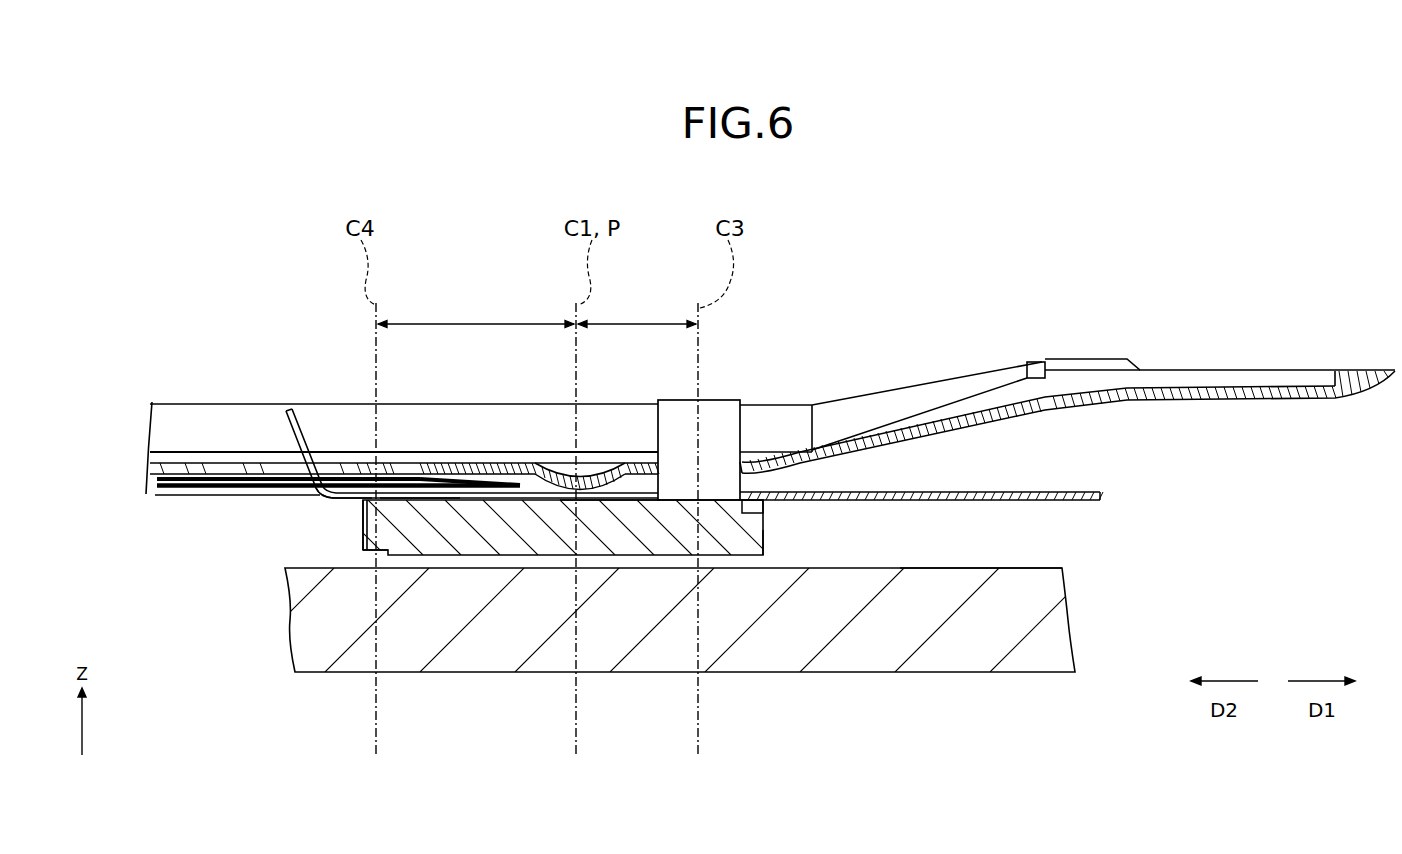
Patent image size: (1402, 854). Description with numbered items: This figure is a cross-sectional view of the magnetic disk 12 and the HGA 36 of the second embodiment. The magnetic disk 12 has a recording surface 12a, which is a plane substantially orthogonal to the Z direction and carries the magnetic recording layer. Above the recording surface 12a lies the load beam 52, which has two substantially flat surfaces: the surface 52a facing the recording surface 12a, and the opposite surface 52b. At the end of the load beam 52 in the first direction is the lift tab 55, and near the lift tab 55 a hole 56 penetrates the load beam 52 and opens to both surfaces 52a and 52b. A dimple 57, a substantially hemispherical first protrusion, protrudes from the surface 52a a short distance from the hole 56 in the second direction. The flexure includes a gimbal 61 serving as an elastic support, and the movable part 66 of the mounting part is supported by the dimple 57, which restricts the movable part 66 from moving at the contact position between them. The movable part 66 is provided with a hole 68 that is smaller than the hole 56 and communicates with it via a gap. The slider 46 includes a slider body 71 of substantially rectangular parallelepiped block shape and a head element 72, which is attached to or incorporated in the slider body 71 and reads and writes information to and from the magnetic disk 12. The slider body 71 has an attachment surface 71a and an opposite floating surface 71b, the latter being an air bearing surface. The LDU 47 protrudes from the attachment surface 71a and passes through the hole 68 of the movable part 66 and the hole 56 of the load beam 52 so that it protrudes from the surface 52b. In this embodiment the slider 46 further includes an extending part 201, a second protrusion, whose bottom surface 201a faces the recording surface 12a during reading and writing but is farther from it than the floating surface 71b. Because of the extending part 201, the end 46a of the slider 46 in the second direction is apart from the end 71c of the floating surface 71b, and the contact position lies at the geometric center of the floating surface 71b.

The magnetic disk 12 is at (985, 652).
The recording surface 12a is at (1062, 567).
The HGA 36 is at (1272, 319).
The slider 46 is at (401, 556).
The end of the slider 46a is at (363, 530).
The LDU 47 is at (724, 413).
The load beam 52 is at (927, 384).
The surface 52a is at (522, 492).
The surface 52b is at (486, 463).
The lift tab 55 is at (1328, 399).
The hole 56 is at (747, 463).
The dimple 57 is at (621, 502).
The gimbal 61 is at (790, 503).
The movable part 66 is at (630, 502).
The hole 68 is at (743, 514).
The slider body 71 is at (478, 500).
The attachment surface 71a is at (416, 482).
The floating surface 71b is at (440, 500).
The end of the floating surface 71c is at (372, 500).
The head element 72 is at (766, 554).
The extending part 201 is at (365, 516).
The bottom surface 201a is at (363, 556).